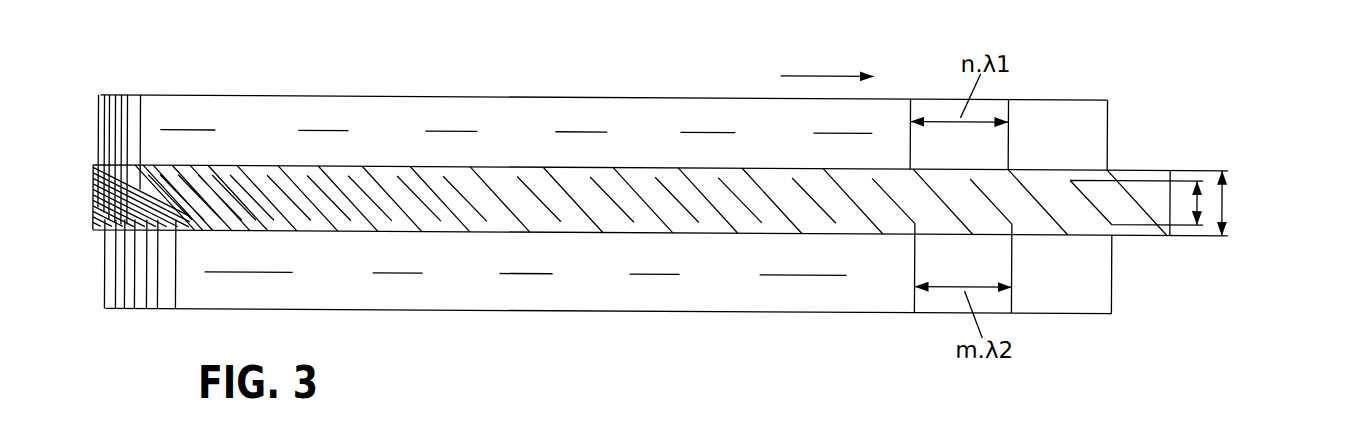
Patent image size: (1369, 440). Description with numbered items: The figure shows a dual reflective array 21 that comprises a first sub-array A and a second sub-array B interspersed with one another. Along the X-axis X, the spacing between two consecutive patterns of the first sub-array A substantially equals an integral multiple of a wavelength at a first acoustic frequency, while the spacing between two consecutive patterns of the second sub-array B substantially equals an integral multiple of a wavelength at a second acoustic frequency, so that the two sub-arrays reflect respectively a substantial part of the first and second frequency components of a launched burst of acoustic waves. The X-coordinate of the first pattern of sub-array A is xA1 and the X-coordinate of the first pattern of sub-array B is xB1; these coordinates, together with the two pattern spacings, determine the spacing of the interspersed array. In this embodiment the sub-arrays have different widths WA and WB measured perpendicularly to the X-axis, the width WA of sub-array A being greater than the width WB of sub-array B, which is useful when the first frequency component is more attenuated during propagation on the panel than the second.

The array 21 is at (1125, 202).
The first sub-array A is at (602, 98).
The second sub-array B is at (602, 311).
The X-axis X is at (815, 74).
The X-coordinate of the first pattern of the sub-array A xA1 is at (1110, 165).
The X-coordinate of the first pattern of the sub-array B xB1 is at (1068, 174).
The width of sub-array A WA is at (1222, 199).
The width of sub-array B WB is at (1195, 197).